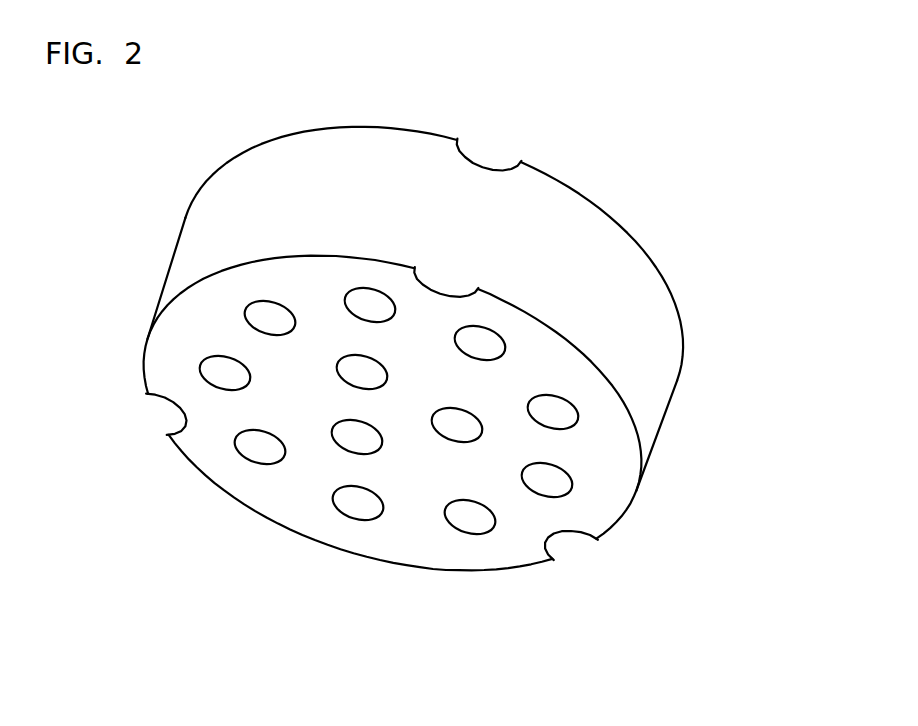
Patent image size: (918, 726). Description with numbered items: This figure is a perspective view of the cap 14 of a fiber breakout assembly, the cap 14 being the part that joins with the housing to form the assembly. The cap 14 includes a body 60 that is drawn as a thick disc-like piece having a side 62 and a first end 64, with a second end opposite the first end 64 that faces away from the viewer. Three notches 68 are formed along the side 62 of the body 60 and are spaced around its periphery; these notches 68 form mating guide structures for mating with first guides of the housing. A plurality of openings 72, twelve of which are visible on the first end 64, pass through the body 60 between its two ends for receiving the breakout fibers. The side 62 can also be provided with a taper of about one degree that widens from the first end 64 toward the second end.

The cap 14 is at (407, 356).
The body 60 is at (181, 233).
The side 62 is at (540, 243).
The first end 64 is at (413, 533).
The notches 68 is at (165, 395).
The openings 72 is at (280, 305).